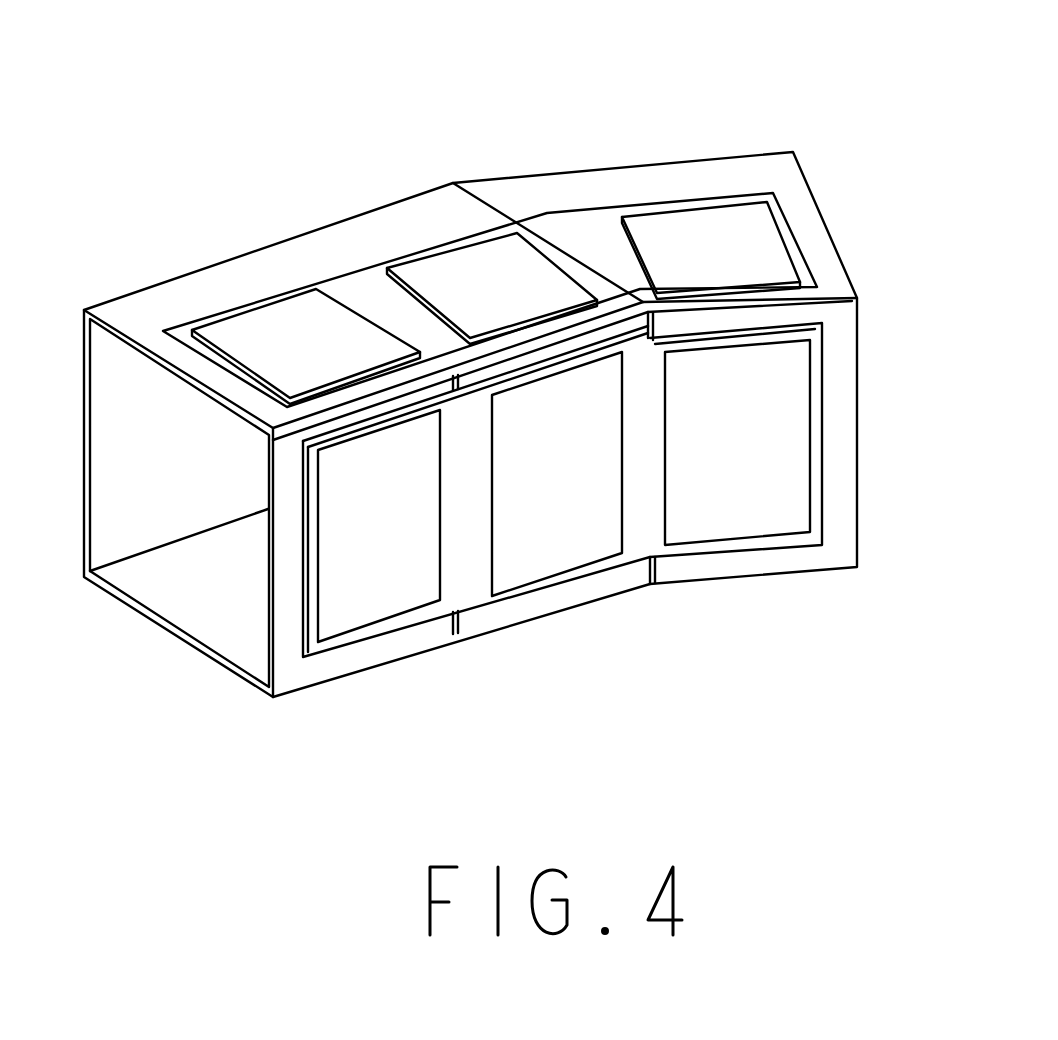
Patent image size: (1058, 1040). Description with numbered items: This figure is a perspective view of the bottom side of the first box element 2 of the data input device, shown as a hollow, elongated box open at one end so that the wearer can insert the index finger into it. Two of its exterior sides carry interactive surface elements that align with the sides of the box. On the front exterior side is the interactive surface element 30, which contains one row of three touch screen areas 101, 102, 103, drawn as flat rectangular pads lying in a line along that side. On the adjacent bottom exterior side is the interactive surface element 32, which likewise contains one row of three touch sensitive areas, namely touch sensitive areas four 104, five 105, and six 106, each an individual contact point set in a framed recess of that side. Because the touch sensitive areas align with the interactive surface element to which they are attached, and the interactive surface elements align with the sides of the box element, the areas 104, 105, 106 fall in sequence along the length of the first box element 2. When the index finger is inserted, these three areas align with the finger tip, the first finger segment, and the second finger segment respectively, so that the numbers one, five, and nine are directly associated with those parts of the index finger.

The first box element 2 is at (392, 228).
The interactive surface element on the front exterior side of the first box element 30 is at (590, 237).
The interactive surface element on the bottom exterior side of the first box element 32 is at (643, 513).
The touch screen area 101 is at (275, 327).
The touch screen area 102 is at (480, 263).
The touch screen area 103 is at (725, 233).
The touch sensitive area four 104 is at (390, 557).
The touch sensitive area five 105 is at (555, 498).
The touch sensitive area six 106 is at (748, 488).